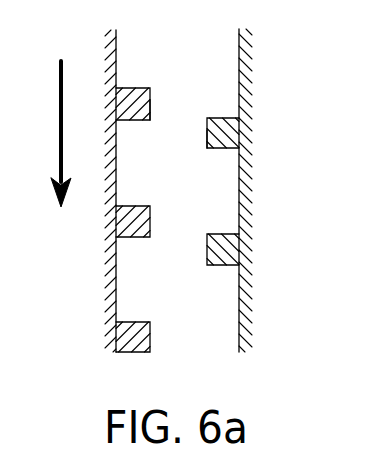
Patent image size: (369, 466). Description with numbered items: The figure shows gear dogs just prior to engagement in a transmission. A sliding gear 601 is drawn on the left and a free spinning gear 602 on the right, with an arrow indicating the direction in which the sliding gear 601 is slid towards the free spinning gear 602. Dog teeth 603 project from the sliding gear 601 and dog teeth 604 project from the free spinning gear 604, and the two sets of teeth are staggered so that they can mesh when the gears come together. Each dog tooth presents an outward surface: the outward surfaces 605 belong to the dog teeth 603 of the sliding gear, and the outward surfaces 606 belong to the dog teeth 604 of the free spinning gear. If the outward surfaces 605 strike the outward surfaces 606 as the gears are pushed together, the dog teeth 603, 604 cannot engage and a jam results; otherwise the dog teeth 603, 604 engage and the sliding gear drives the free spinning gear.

The sliding gear 601 is at (61, 329).
The free spinning gear 602 is at (327, 327).
The dog teeth of the sliding gear 603 is at (140, 88).
The dog teeth of the free spinning gear 604 is at (223, 118).
The outward surfaces of the dog teeth of the sliding gear 605 is at (149, 108).
The outward surfaces of the dog teeth of the free spinning gear 606 is at (207, 140).